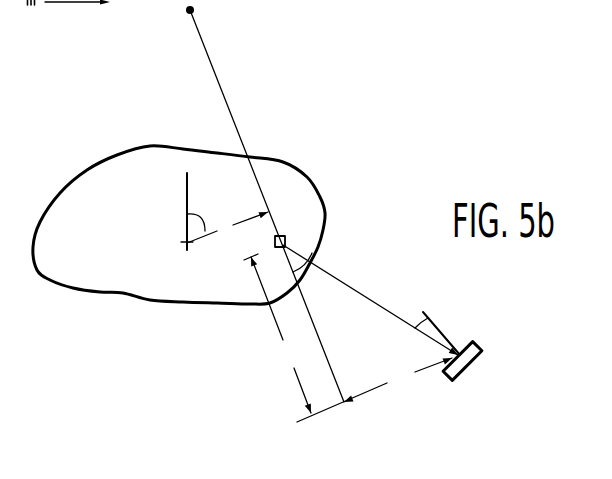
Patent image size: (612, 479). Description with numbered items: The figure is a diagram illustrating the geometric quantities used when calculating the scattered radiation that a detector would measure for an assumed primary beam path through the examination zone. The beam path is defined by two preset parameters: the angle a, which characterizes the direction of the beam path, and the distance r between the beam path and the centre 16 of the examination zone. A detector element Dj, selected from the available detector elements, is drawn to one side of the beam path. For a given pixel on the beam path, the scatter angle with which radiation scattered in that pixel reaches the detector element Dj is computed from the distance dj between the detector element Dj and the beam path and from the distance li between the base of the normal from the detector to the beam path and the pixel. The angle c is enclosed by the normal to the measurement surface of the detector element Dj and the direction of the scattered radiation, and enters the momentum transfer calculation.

The centre 16 is at (183, 246).
The angle a is at (185, 221).
The distance r is at (227, 227).
The distance li is at (277, 333).
The distance dj is at (374, 390).
The detector element Dj is at (470, 360).
The angle c is at (435, 329).